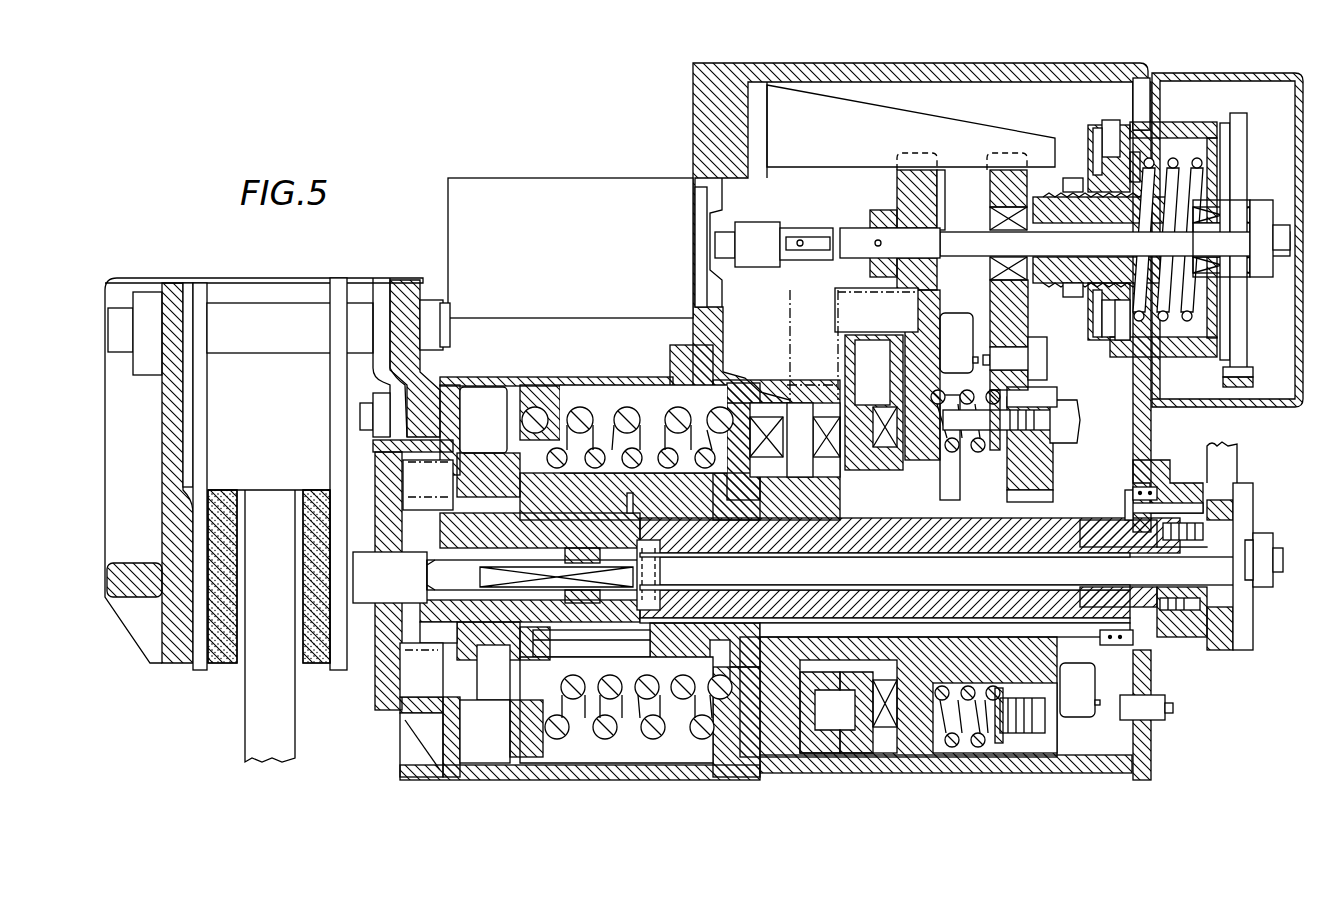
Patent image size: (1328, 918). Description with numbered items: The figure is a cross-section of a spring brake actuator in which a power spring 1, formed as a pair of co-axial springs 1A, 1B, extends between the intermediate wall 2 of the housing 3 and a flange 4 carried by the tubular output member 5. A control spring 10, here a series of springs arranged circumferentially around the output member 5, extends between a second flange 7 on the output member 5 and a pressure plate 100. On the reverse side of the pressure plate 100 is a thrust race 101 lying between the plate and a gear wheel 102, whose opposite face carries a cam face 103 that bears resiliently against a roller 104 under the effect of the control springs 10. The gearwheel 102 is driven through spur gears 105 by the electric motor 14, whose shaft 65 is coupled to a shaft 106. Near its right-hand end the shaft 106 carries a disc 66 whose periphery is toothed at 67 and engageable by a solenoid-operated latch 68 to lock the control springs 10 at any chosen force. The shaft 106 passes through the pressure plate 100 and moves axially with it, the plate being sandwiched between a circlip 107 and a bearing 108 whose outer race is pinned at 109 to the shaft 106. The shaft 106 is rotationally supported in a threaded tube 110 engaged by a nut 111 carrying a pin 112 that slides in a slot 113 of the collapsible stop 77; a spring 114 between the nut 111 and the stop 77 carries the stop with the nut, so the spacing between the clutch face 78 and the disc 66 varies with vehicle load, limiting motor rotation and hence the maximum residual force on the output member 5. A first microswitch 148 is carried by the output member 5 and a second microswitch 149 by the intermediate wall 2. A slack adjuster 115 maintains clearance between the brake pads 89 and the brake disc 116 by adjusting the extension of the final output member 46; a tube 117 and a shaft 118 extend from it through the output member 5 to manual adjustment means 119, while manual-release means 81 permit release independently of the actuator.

The power spring 1 is at (595, 392).
The co-axial spring 1A is at (637, 720).
The co-axial spring 1B is at (572, 720).
The intermediate wall 2 is at (760, 700).
The housing 3 is at (683, 112).
The flange 4 is at (484, 735).
The output member 5 is at (793, 640).
The second flange 7 is at (1030, 467).
The control spring 10 is at (960, 764).
The electric motor 14 is at (583, 260).
The final output member 46 is at (394, 591).
The shaft 65 is at (695, 240).
The disc 66 is at (1250, 125).
The toothed periphery 67 is at (1253, 370).
The solenoid-operated latch 68 is at (1238, 386).
The collapsible stop 77 is at (1176, 110).
The clutch face 78 is at (1222, 120).
The manual-release means 81 is at (1233, 670).
The brake pads 89 is at (218, 623).
The pressure plate 100 is at (915, 712).
The thrust race 101 is at (878, 400).
The gear wheel 102 is at (850, 405).
The cam face 103 is at (790, 520).
The roller 104 is at (772, 402).
The spur gears 105 is at (798, 308).
The shaft 106 is at (1003, 254).
The circlip 107 is at (947, 228).
The bearing 108 is at (876, 210).
The pin 109 is at (878, 240).
The threaded tube 110 is at (1048, 203).
The nut 111 is at (1100, 180).
The pin 112 is at (1110, 130).
The slot 113 is at (1130, 130).
The spring 114 is at (1170, 320).
The slack adjuster mechanism 115 is at (400, 713).
The brake disc 116 is at (274, 585).
The tube 117 is at (1045, 590).
The shaft 118 is at (1104, 583).
The manual adjustment means 119 is at (1290, 572).
The first microswitch 148 is at (953, 318).
The second microswitch 149 is at (1083, 675).